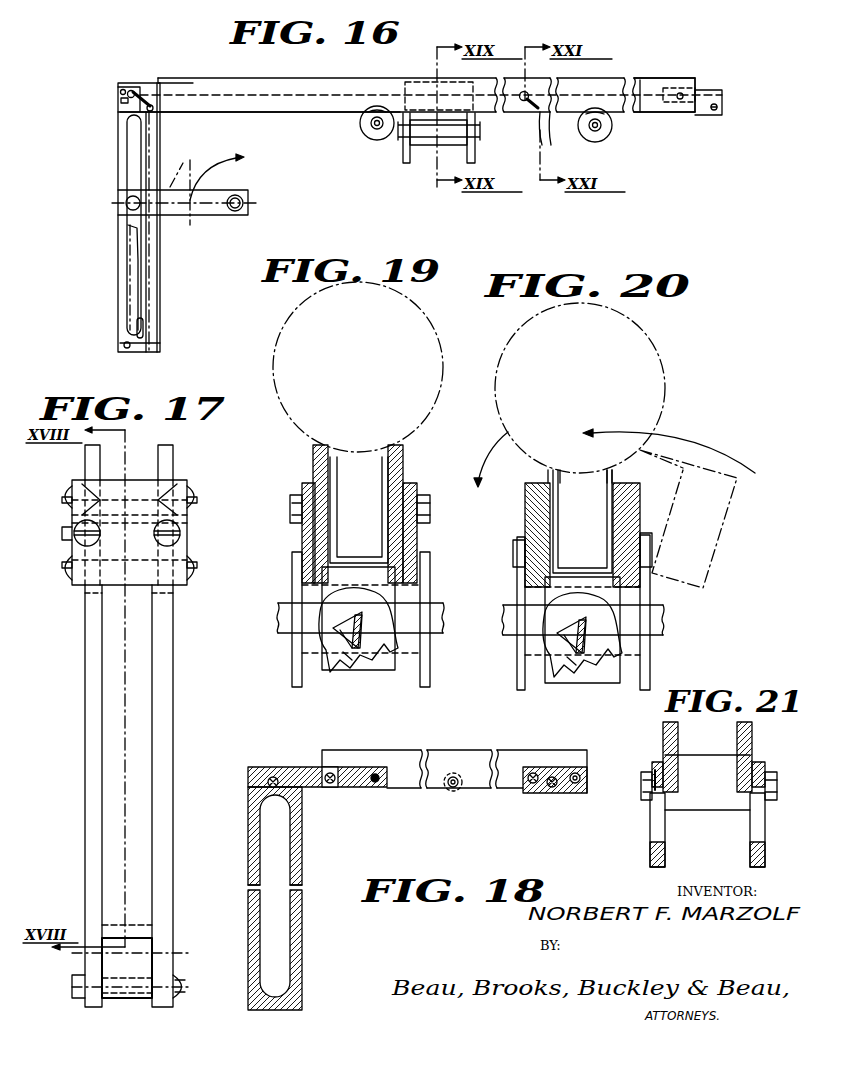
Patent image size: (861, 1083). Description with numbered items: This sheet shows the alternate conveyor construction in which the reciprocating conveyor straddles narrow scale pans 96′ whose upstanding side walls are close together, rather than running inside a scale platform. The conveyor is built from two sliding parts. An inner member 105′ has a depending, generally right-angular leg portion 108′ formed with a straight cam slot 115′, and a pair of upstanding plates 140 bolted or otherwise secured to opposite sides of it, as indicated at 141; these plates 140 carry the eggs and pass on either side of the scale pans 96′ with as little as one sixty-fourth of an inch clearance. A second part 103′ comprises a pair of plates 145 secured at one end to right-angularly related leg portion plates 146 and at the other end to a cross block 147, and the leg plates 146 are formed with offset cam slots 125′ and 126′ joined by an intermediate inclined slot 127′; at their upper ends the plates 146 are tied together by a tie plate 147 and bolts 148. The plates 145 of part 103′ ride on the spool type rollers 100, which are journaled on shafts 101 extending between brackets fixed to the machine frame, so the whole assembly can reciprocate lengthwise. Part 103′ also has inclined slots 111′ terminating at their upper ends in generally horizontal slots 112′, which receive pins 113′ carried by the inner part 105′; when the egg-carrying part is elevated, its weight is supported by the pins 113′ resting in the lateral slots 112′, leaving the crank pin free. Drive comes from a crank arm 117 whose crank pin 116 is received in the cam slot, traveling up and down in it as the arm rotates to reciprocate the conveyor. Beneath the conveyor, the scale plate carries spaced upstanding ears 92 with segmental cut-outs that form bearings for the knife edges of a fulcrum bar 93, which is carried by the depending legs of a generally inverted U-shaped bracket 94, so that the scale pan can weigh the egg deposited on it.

In FIG. 16, the upstanding plates 140 is at (278, 79).
In FIG. 17, the upstanding plates 140 is at (166, 457).
In FIG. 19, the upstanding plates 140 is at (404, 452).
In FIG. 20, the upstanding plates 140 is at (548, 484).
In FIG. 18, the upstanding plates 140 is at (396, 752).
In FIG. 21, the upstanding plates 140 is at (746, 736).
In FIG. 16, the pins 113′ is at (130, 93).
In FIG. 17, the pins 113′ is at (76, 522).
In FIG. 19, the pins 113′ is at (426, 513).
In FIG. 18, the pins 113′ is at (270, 782).
In FIG. 16, the horizontal slots 112′ is at (140, 92).
In FIG. 16, the inclined slots 111′ is at (131, 100).
In FIG. 16, the leg portion plates 146 is at (156, 134).
In FIG. 17, the leg portion plates 146 is at (85, 745).
In FIG. 16, the second part 103′ is at (291, 108).
In FIG. 16, the cam slot 125′ is at (130, 152).
In FIG. 16, the crank arm 117 is at (207, 188).
In FIG. 16, the crank pin 116 is at (250, 203).
In FIG. 16, the intermediate inclined slot 127′ is at (136, 229).
In FIG. 16, the straight cam slot 115′ is at (140, 284).
In FIG. 18, the straight cam slot 115′ is at (280, 944).
In FIG. 16, the cam slot 126′ is at (150, 320).
In FIG. 16, the spool type bearings 100 is at (378, 129).
In FIG. 19, the spool type bearings 100 is at (297, 600).
In FIG. 20, the spool type bearings 100 is at (644, 596).
In FIG. 16, the plates 145 is at (661, 113).
In FIG. 20, the plates 145 is at (527, 496).
In FIG. 17, the bolts 148 is at (182, 542).
In FIG. 17, the cross block / tie plate 147 is at (178, 550).
In FIG. 17, the leg portion 108′ is at (140, 942).
In FIG. 18, the leg portion 108′ is at (302, 838).
In FIG. 19, the scale pans 96′ is at (356, 518).
In FIG. 20, the scale pans 96′ is at (562, 538).
In FIG. 16, the shafts 101 is at (439, 138).
In FIG. 19, the shafts 101 is at (437, 622).
In FIG. 20, the shafts 101 is at (507, 628).
In FIG. 19, the upstanding ears 92 is at (333, 668).
In FIG. 20, the upstanding ears 92 is at (555, 680).
In FIG. 19, the fulcrum bar 93 is at (345, 668).
In FIG. 20, the fulcrum bar 93 is at (572, 680).
In FIG. 19, the inverted U-shaped bracket 94 is at (385, 668).
In FIG. 20, the inverted U-shaped bracket 94 is at (612, 673).
In FIG. 18, the inner member 105′ is at (305, 766).
In FIG. 18, the bolts 141 is at (332, 784).